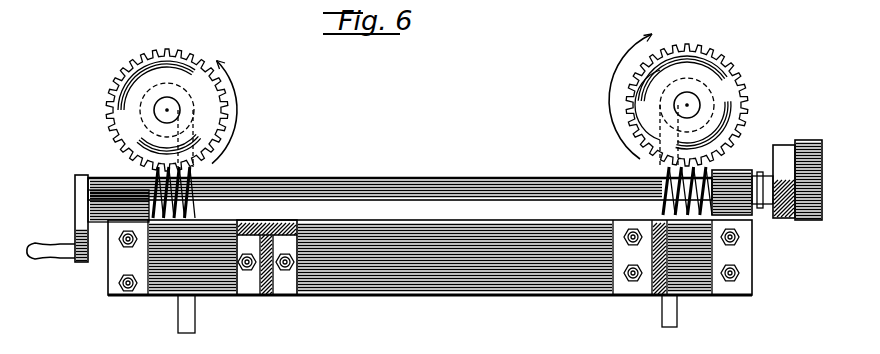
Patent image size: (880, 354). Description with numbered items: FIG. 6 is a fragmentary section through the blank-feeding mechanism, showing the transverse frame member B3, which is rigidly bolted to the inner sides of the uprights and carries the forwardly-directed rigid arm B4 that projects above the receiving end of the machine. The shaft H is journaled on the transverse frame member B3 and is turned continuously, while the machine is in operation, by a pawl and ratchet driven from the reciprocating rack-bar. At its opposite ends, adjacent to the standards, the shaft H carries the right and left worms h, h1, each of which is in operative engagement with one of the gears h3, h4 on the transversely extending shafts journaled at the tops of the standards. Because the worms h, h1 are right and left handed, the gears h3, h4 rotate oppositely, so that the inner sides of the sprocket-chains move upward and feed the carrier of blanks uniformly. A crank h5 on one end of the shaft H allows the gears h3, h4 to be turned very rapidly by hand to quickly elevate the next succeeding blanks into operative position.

The shaft H is at (431, 184).
The transverse frame member B3 is at (541, 283).
The rigid arm B4 is at (267, 298).
The right worm h is at (712, 167).
The left worm h1 is at (200, 173).
The gear h3 is at (718, 62).
The gear h4 is at (186, 110).
The crank h5 is at (75, 226).